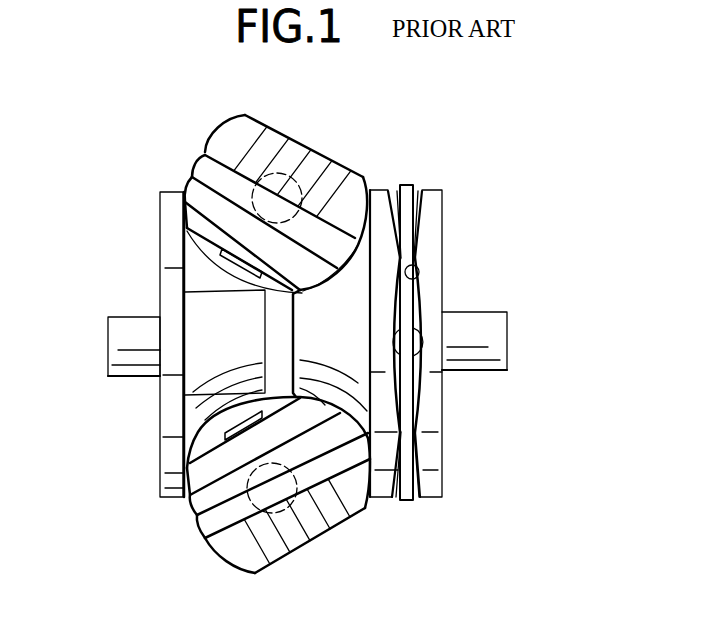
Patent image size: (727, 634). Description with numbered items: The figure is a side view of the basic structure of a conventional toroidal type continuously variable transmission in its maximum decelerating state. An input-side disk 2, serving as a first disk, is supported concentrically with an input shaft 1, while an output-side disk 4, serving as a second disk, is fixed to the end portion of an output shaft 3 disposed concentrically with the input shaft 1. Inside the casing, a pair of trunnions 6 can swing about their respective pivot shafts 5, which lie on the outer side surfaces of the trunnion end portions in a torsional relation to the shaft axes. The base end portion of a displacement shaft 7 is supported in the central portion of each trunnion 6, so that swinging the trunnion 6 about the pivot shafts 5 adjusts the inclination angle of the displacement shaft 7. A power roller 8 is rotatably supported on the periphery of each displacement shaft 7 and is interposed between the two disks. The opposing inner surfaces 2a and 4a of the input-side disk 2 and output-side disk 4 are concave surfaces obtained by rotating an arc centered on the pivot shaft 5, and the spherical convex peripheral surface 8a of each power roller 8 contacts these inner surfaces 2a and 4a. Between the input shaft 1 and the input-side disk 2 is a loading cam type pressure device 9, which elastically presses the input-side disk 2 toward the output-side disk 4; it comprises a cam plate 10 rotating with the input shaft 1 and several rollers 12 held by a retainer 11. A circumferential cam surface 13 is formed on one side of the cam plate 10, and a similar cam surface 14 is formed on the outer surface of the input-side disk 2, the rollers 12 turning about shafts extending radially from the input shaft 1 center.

The input shaft 1 is at (498, 335).
The input-side disk 2 is at (383, 220).
The inner surface of input-side disk 2a is at (365, 463).
The output shaft 3 is at (115, 342).
The output-side disk 4 is at (167, 232).
The inner surface of output-side disk 4a is at (256, 280).
The pivot shaft 5 is at (294, 172).
The trunnion 6 is at (220, 138).
The displacement shaft 7 is at (222, 262).
The power roller 8 is at (183, 194).
The peripheral surface of power roller 8a is at (190, 206).
The pressure device 9 is at (458, 188).
The cam plate 10 is at (440, 233).
The retainer 11 is at (408, 187).
The roller 12 is at (395, 188).
The cam surface 13 is at (412, 265).
The cam surface 14 is at (396, 400).